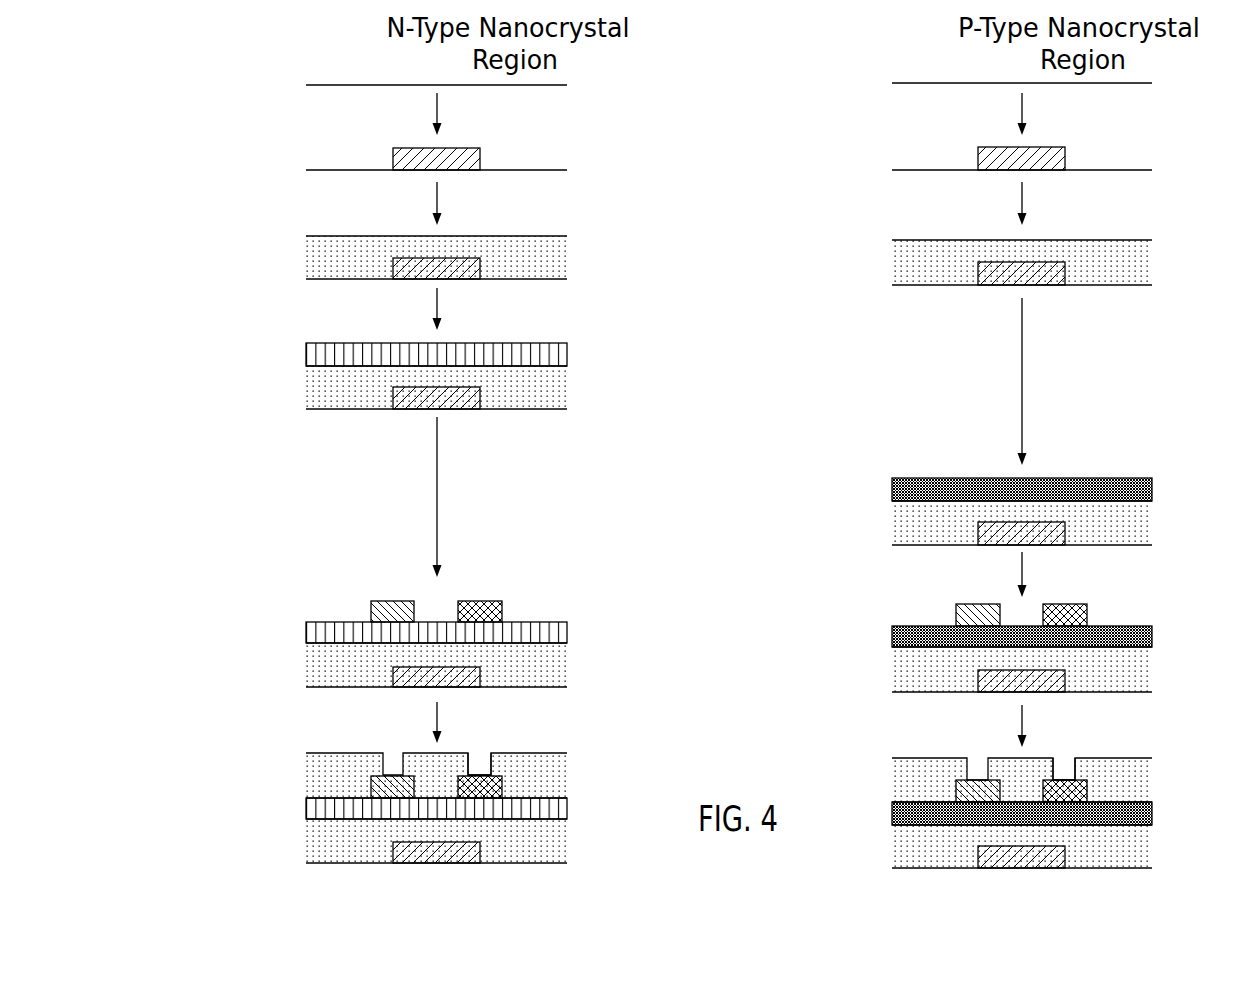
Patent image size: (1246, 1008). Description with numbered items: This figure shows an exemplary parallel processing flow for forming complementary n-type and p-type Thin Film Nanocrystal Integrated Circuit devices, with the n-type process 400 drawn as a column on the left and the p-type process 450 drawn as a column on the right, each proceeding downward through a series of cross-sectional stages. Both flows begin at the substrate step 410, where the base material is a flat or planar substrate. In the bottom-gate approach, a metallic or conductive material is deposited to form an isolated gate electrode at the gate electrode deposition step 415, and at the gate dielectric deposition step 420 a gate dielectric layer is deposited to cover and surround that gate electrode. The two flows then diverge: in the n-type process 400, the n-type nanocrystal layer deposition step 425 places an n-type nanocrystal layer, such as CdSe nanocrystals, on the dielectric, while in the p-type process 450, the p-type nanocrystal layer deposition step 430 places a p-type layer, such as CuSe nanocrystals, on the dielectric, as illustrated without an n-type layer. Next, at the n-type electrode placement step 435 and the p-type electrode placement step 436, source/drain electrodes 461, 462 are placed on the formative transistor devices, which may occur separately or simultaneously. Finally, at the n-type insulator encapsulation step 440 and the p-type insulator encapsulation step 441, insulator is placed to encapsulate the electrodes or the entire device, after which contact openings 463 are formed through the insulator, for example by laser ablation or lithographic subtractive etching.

The n-type process 400 is at (326, 385).
The p-type process 450 is at (890, 387).
The substrate step 410 is at (717, 89).
The gate electrode deposition step 415 is at (717, 167).
The gate dielectric deposition step 420 is at (717, 260).
The n-type nanocrystal layer deposition step 425 is at (389, 376).
The p-type nanocrystal layer deposition step 430 is at (1058, 511).
The n-type electrode placement step 435 is at (389, 657).
The p-type electrode placement step 436 is at (1058, 659).
The n-type insulator encapsulation step 440 is at (389, 808).
The p-type insulator encapsulation step 441 is at (1058, 813).
The electrode 461 is at (626, 600).
The electrode 462 is at (826, 600).
The contact openings 463 is at (841, 744).